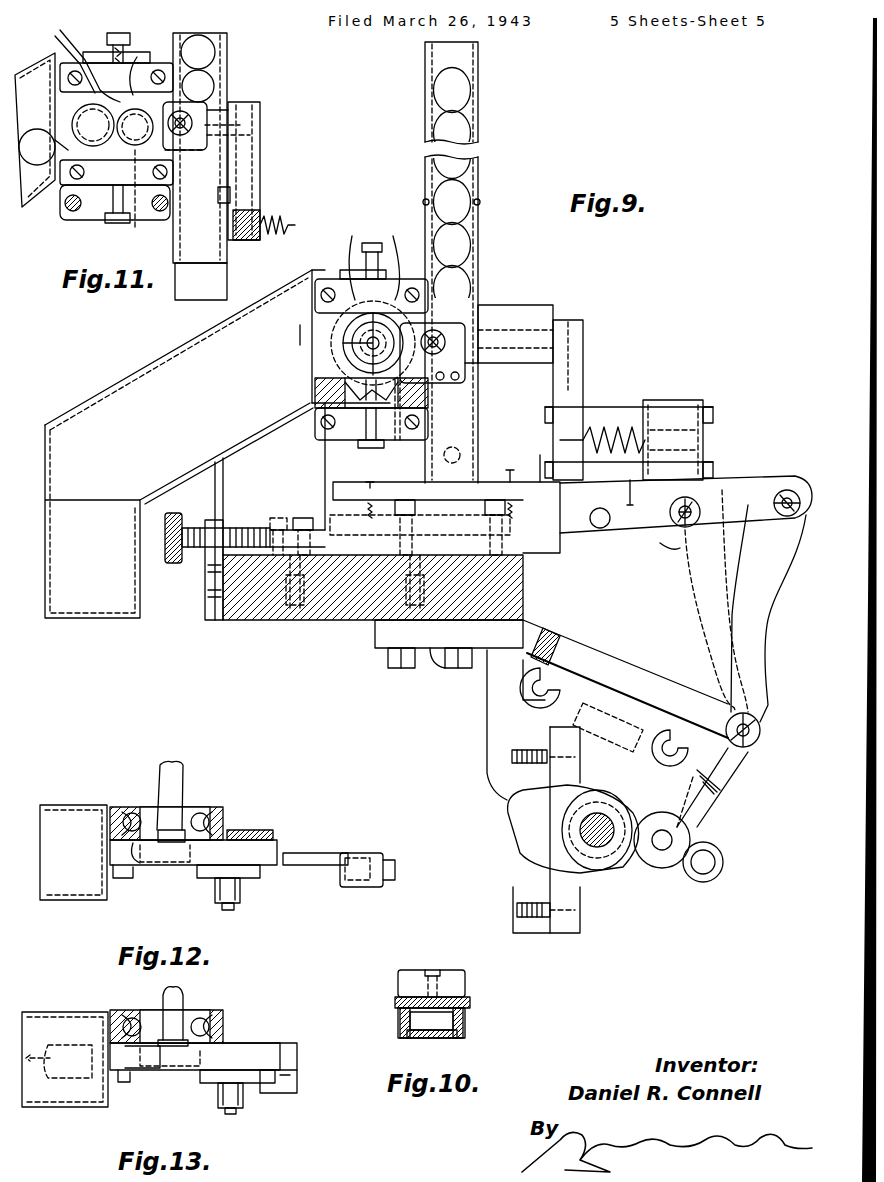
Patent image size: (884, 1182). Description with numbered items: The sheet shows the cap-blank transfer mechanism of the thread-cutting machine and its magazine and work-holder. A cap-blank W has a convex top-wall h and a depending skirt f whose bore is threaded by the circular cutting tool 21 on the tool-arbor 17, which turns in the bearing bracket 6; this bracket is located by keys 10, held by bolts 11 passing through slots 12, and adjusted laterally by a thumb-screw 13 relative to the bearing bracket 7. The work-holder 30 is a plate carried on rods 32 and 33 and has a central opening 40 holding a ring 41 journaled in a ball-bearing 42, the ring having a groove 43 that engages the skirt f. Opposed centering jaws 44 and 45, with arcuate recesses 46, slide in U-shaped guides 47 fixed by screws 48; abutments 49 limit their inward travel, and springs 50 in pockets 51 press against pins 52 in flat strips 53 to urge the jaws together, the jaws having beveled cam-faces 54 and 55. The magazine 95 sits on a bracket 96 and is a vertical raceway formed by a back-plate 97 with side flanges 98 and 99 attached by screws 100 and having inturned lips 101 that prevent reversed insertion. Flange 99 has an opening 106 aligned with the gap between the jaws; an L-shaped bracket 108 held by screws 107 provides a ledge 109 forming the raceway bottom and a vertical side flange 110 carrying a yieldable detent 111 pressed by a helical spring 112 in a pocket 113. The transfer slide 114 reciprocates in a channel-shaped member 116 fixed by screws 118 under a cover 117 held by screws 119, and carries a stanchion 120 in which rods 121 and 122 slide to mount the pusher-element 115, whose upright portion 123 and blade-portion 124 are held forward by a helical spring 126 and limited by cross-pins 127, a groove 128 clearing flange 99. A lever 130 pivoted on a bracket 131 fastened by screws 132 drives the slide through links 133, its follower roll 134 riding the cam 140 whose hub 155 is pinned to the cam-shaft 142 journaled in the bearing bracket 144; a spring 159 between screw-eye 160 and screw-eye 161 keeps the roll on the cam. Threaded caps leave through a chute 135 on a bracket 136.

In FIG. 9, the bearing bracket 6 is at (325, 487).
In FIG. 9, the bearing bracket 7 is at (272, 615).
In FIG. 9, the keys 10 is at (408, 212).
In FIG. 9, the bolts 11 is at (305, 518).
In FIG. 9, the slots 12 is at (294, 352).
In FIG. 9, the thumb-screw 13 is at (240, 535).
In FIG. 12, the tool-arbor 17 is at (185, 770).
In FIG. 13, the tool-arbor 17 is at (180, 992).
In FIG. 9, the circular cutting tool 21 is at (352, 360).
In FIG. 11, the work-holder 30 is at (62, 210).
In FIG. 9, the work-holder 30 is at (345, 270).
In FIG. 12, the work-holder 30 is at (222, 812).
In FIG. 13, the work-holder 30 is at (222, 1020).
In FIG. 11, the rod 32 is at (160, 212).
In FIG. 9, the rod 32 is at (425, 435).
In FIG. 11, the rod 33 is at (70, 212).
In FIG. 9, the rod 33 is at (325, 420).
In FIG. 12, the central opening 40 is at (112, 835).
In FIG. 13, the central opening 40 is at (108, 1034).
In FIG. 12, the ring 41 is at (199, 813).
In FIG. 13, the ring 41 is at (145, 1018).
In FIG. 12, the ball-bearing 42 is at (112, 818).
In FIG. 13, the ball-bearing 42 is at (128, 1018).
In FIG. 12, the groove 43 is at (136, 813).
In FIG. 13, the groove 43 is at (140, 1070).
In FIG. 11, the centering jaw 44 is at (215, 55).
In FIG. 9, the centering jaw 44 is at (393, 272).
In FIG. 11, the centering jaw 45 is at (62, 172).
In FIG. 9, the centering jaw 45 is at (350, 440).
In FIG. 12, the centering jaw 45 is at (140, 868).
In FIG. 13, the centering jaw 45 is at (135, 1060).
In FIG. 11, the arcuate recesses 46 is at (112, 125).
In FIG. 9, the arcuate recesses 46 is at (350, 340).
In FIG. 11, the U-shaped guides 47 is at (185, 112).
In FIG. 9, the U-shaped guides 47 is at (438, 322).
In FIG. 12, the U-shaped guides 47 is at (115, 862).
In FIG. 13, the U-shaped guides 47 is at (118, 1060).
In FIG. 11, the screws 48 is at (68, 78).
In FIG. 9, the screws 48 is at (325, 292).
In FIG. 12, the screws 48 is at (122, 878).
In FIG. 13, the screws 48 is at (122, 1082).
In FIG. 9, the abutments 49 is at (346, 262).
In FIG. 11, the springs 50 is at (123, 215).
In FIG. 9, the springs 50 is at (405, 445).
In FIG. 11, the pockets 51 is at (116, 172).
In FIG. 9, the pockets 51 is at (358, 440).
In FIG. 11, the pins 52 is at (135, 52).
In FIG. 9, the pins 52 is at (375, 243).
In FIG. 11, the flat strips 53 is at (107, 36).
In FIG. 9, the flat strips 53 is at (366, 262).
In FIG. 11, the cam-faces 54 is at (140, 55).
In FIG. 9, the cam-faces 54 is at (296, 311).
In FIG. 11, the cam-face 55 is at (60, 30).
In FIG. 11, the magazine 95 is at (235, 51).
In FIG. 9, the magazine 95 is at (420, 133).
In FIG. 12, the magazine 95 is at (290, 819).
In FIG. 13, the magazine 95 is at (293, 1040).
In FIG. 10, the magazine 95 is at (477, 992).
In FIG. 11, the bracket 96 is at (177, 290).
In FIG. 10, the bracket 96 is at (412, 970).
In FIG. 11, the back-plate 97 is at (205, 263).
In FIG. 9, the back-plate 97 is at (458, 65).
In FIG. 13, the back-plate 97 is at (270, 1040).
In FIG. 10, the back-plate 97 is at (440, 997).
In FIG. 9, the side flange 98 is at (426, 90).
In FIG. 10, the side flange 98 is at (400, 1035).
In FIG. 11, the side flange 99 is at (210, 90).
In FIG. 9, the side flange 99 is at (476, 120).
In FIG. 13, the side flange 99 is at (285, 1046).
In FIG. 10, the side flange 99 is at (465, 1022).
In FIG. 9, the screws 100 is at (479, 197).
In FIG. 10, the screws 100 is at (395, 1002).
In FIG. 11, the inturned lips 101 is at (200, 40).
In FIG. 9, the inturned lips 101 is at (470, 160).
In FIG. 13, the inturned lips 101 is at (292, 1080).
In FIG. 10, the inturned lips 101 is at (458, 1040).
In FIG. 9, the opening 106 is at (485, 312).
In FIG. 13, the opening 106 is at (290, 1058).
In FIG. 9, the screws 107 is at (455, 390).
In FIG. 12, the screws 107 is at (250, 830).
In FIG. 11, the L-shaped bracket 108 is at (240, 180).
In FIG. 9, the L-shaped bracket 108 is at (468, 380).
In FIG. 12, the L-shaped bracket 108 is at (255, 878).
In FIG. 13, the L-shaped bracket 108 is at (205, 1075).
In FIG. 11, the ledge 109 is at (225, 140).
In FIG. 9, the ledge 109 is at (468, 355).
In FIG. 12, the ledge 109 is at (210, 862).
In FIG. 13, the ledge 109 is at (265, 1038).
In FIG. 11, the vertical side flange 110 is at (220, 118).
In FIG. 9, the vertical side flange 110 is at (470, 330).
In FIG. 12, the vertical side flange 110 is at (250, 880).
In FIG. 13, the vertical side flange 110 is at (215, 1085).
In FIG. 11, the yieldable detent 111 is at (215, 128).
In FIG. 9, the yieldable detent 111 is at (475, 345).
In FIG. 12, the yieldable detent 111 is at (220, 890).
In FIG. 13, the yieldable detent 111 is at (240, 1095).
In FIG. 12, the helical spring 112 is at (242, 892).
In FIG. 13, the helical spring 112 is at (240, 1108).
In FIG. 12, the pocket 113 is at (228, 910).
In FIG. 13, the pocket 113 is at (230, 1114).
In FIG. 9, the transfer slide 114 is at (578, 533).
In FIG. 11, the pusher-element 115 is at (265, 160).
In FIG. 9, the pusher-element 115 is at (581, 318).
In FIG. 12, the pusher-element 115 is at (378, 853).
In FIG. 13, the pusher-element 115 is at (290, 1092).
In FIG. 9, the channel-shaped member 116 is at (562, 553).
In FIG. 9, the cover 117 is at (529, 458).
In FIG. 9, the screws 118 is at (322, 612).
In FIG. 9, the screws 119 is at (512, 462).
In FIG. 9, the stanchion 120 is at (705, 426).
In FIG. 11, the rod 121 is at (265, 192).
In FIG. 9, the rod 121 is at (600, 407).
In FIG. 12, the rod 121 is at (392, 880).
In FIG. 9, the rod 122 is at (630, 505).
In FIG. 9, the upright portion 123 is at (580, 368).
In FIG. 9, the blade-portion 124 is at (540, 313).
In FIG. 12, the blade-portion 124 is at (325, 853).
In FIG. 13, the blade-portion 124 is at (250, 1043).
In FIG. 11, the helical spring 126 is at (290, 222).
In FIG. 9, the helical spring 126 is at (625, 430).
In FIG. 9, the cross-pins 127 is at (715, 410).
In FIG. 12, the cross-pins 127 is at (347, 880).
In FIG. 11, the groove 128 is at (260, 145).
In FIG. 9, the groove 128 is at (567, 340).
In FIG. 12, the groove 128 is at (358, 887).
In FIG. 13, the groove 128 is at (275, 1085).
In FIG. 9, the lever 130 is at (735, 650).
In FIG. 9, the bracket 131 is at (628, 680).
In FIG. 9, the screws 132 is at (478, 665).
In FIG. 9, the links 133 is at (740, 522).
In FIG. 9, the follower roll 134 is at (690, 878).
In FIG. 9, the chute 135 is at (115, 388).
In FIG. 12, the chute 135 is at (58, 815).
In FIG. 13, the chute 135 is at (55, 1020).
In FIG. 9, the bracket 136 is at (224, 481).
In FIG. 9, the cam 140 is at (520, 842).
In FIG. 9, the cam-shaft 142 is at (650, 868).
In FIG. 9, the bearing bracket 144 is at (510, 790).
In FIG. 9, the hub 155 is at (555, 880).
In FIG. 9, the spring 159 is at (630, 750).
In FIG. 9, the screw-eye 160 is at (670, 765).
In FIG. 9, the screw-eye 161 is at (530, 705).
In FIG. 9, the cap-blank W is at (465, 255).
In FIG. 12, the cap-blank W is at (165, 870).
In FIG. 13, the cap-blank W is at (60, 1108).
In FIG. 10, the cap-blank W is at (426, 1040).
In FIG. 10, the skirt f is at (405, 1018).
In FIG. 10, the top-wall h is at (415, 1036).